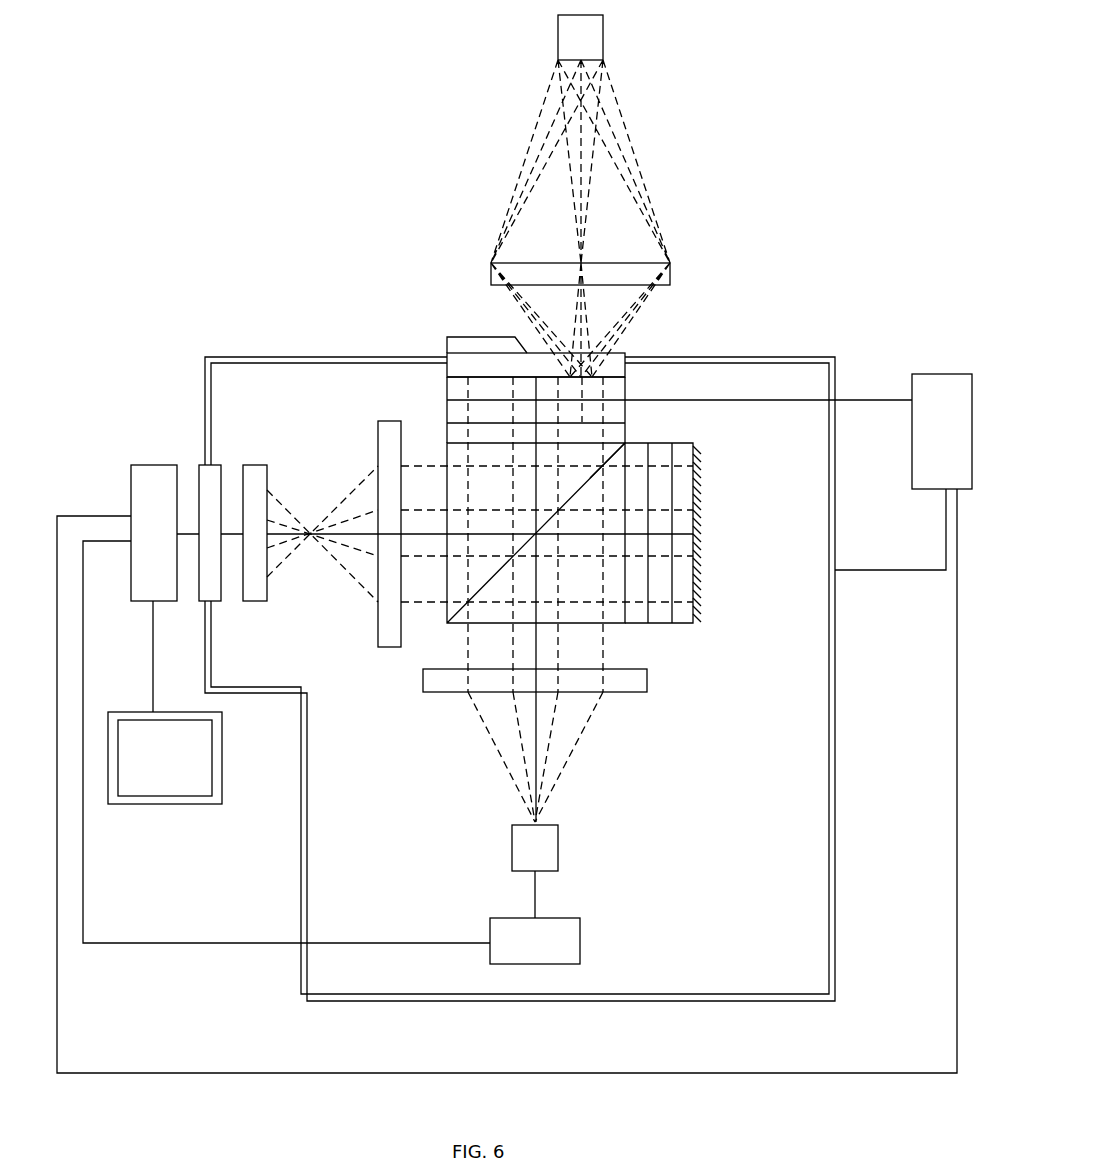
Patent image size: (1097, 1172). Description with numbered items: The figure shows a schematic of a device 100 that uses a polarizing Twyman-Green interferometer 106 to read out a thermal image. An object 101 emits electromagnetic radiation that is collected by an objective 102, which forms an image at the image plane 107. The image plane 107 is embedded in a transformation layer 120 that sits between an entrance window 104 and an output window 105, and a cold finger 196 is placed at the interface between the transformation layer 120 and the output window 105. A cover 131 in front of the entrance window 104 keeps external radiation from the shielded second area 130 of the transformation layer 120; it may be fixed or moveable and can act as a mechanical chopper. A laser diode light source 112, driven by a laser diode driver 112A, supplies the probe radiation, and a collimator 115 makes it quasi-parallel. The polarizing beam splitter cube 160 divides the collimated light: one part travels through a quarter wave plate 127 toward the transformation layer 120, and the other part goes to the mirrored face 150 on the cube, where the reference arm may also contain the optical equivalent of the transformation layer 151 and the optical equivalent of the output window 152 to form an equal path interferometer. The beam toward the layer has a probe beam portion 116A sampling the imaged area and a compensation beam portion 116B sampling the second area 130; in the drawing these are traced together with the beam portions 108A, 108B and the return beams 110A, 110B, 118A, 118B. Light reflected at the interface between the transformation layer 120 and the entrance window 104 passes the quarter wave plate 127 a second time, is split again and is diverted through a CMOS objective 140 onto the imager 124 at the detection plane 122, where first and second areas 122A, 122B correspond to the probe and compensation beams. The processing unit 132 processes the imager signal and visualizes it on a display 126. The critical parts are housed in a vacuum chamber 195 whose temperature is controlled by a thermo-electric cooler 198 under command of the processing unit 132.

The device 100 is at (353, 163).
The object 101 is at (587, 47).
The objective 102 is at (638, 274).
The entrance window 104 is at (614, 360).
The output window 105 is at (614, 412).
The interferometer 106 is at (736, 845).
The image plane 107 is at (614, 381).
The first beam portion 108A is at (390, 465).
The second beam portion 108B is at (390, 558).
The first reflected beam 110A is at (661, 457).
The second reflected beam 110B is at (661, 548).
The light source 112 is at (541, 850).
The detector electronics 112A is at (561, 938).
The collimator 115 is at (450, 681).
The probe beam portion 116A is at (390, 509).
The compensation beam portion 116B is at (390, 603).
The first return beam 118A is at (661, 506).
The second return beam 118B is at (661, 594).
The transformation layer 120 is at (490, 386).
The detection plane 122 is at (257, 578).
The first area 122A is at (268, 563).
The second area 122B is at (302, 489).
The imager 124 is at (211, 478).
The display 126 is at (193, 763).
The quarter wave plate 127 is at (611, 437).
The second area 130 is at (462, 375).
The cover 131 is at (477, 351).
The processing unit 132 is at (160, 483).
The CMOS objective 140 is at (390, 633).
The mirrored face 150 is at (705, 613).
The optical equivalent of the transformation layer 151 is at (661, 613).
The optical equivalent of the output window 152 is at (684, 613).
The beam splitter cube 160 is at (493, 487).
The vacuum chamber 195 is at (652, 1000).
The cold finger 196 is at (589, 396).
The thermo-electric cooler 198 is at (930, 388).